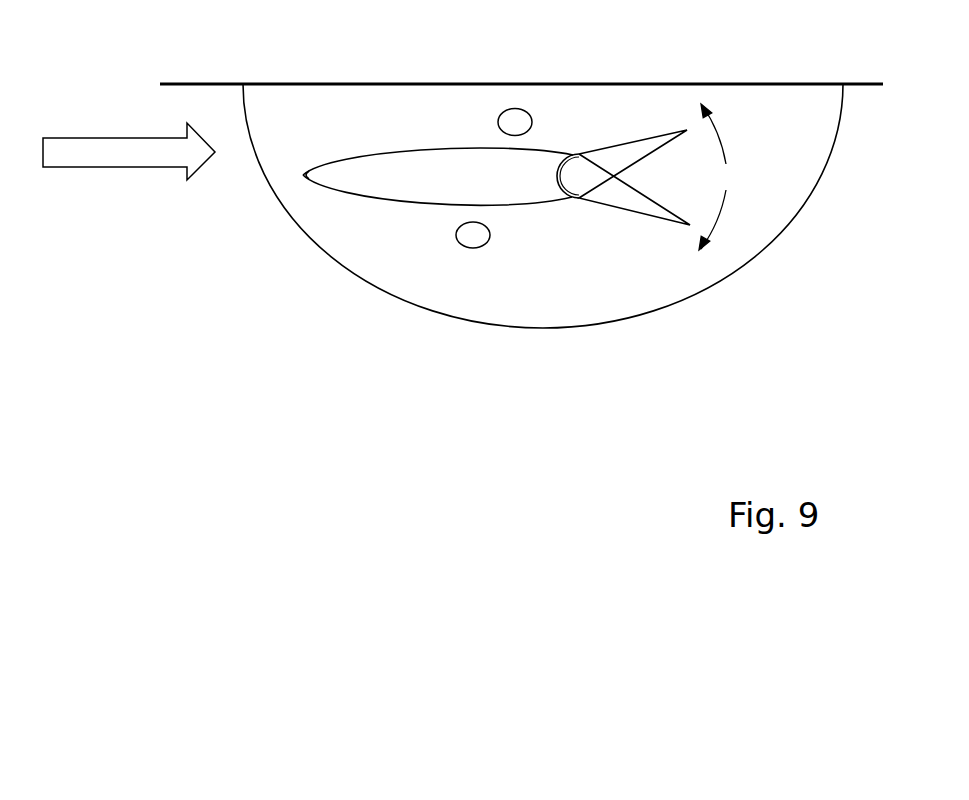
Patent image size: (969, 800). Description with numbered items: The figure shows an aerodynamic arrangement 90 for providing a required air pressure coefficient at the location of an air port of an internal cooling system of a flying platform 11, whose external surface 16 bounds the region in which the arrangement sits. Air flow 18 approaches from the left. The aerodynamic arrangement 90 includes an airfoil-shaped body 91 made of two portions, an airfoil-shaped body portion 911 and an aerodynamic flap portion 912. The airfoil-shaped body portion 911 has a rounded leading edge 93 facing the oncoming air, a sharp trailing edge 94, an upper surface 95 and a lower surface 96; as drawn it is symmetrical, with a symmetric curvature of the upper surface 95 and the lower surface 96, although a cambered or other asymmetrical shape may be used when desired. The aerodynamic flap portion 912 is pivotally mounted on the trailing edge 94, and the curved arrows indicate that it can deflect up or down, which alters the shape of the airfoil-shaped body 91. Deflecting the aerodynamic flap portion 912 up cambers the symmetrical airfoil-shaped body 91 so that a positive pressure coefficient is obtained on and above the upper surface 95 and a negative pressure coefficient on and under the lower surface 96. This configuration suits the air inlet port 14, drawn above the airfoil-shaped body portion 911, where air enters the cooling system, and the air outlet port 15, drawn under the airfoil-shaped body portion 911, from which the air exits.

The flying platform 11 is at (290, 222).
The air inlet port 14 is at (518, 125).
The air outlet port 15 is at (477, 240).
The external surface 16 is at (773, 172).
The air flow arrow 18 is at (113, 167).
The aerodynamic arrangement 90 is at (500, 220).
The airfoil-shaped body 91 is at (578, 128).
The rounded leading edge 93 is at (302, 176).
The sharp trailing edge 94 is at (595, 213).
The upper surface 95 is at (412, 149).
The lower surface 96 is at (413, 208).
The airfoil-shaped body portion 911 is at (417, 138).
The aerodynamic flap portion 912 is at (643, 147).